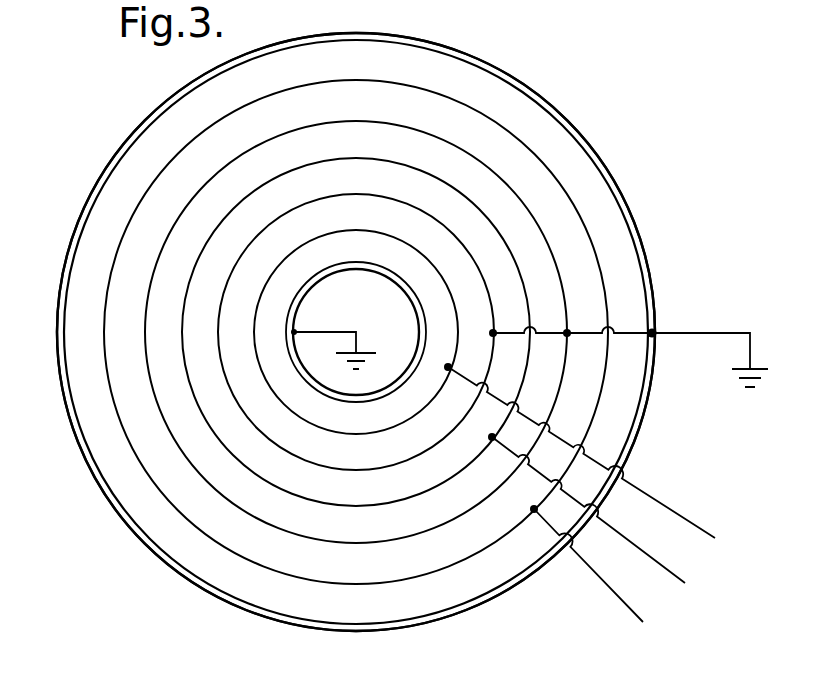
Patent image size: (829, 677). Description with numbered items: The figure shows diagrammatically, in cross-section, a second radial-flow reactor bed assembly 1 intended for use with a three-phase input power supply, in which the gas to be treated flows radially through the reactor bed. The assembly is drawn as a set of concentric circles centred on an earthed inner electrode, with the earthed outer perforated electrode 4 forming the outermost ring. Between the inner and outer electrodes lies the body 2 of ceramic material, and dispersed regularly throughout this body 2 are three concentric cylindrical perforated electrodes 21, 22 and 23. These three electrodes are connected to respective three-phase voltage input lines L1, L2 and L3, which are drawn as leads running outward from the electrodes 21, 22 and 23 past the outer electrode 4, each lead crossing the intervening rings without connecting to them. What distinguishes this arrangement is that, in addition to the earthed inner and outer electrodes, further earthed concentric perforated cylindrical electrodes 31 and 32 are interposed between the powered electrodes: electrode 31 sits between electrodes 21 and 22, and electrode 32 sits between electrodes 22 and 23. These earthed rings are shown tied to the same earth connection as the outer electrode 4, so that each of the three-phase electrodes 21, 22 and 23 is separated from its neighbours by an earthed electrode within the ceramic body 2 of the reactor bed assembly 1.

The radial-flow reactor bed assembly 1 is at (626, 184).
The body of ceramic material 2 is at (617, 237).
The outer perforated electrode 4 is at (653, 280).
The concentric cylindrical perforated electrode 21 is at (458, 337).
The concentric cylindrical perforated electrode 22 is at (420, 495).
The concentric cylindrical perforated electrode 23 is at (427, 574).
The earthed concentric perforated cylindrical electrode 31 is at (393, 468).
The earthed concentric perforated cylindrical electrode 32 is at (563, 383).
The three-phase voltage input line L1 is at (595, 460).
The three-phase voltage input line L2 is at (605, 521).
The three-phase voltage input line L3 is at (602, 577).